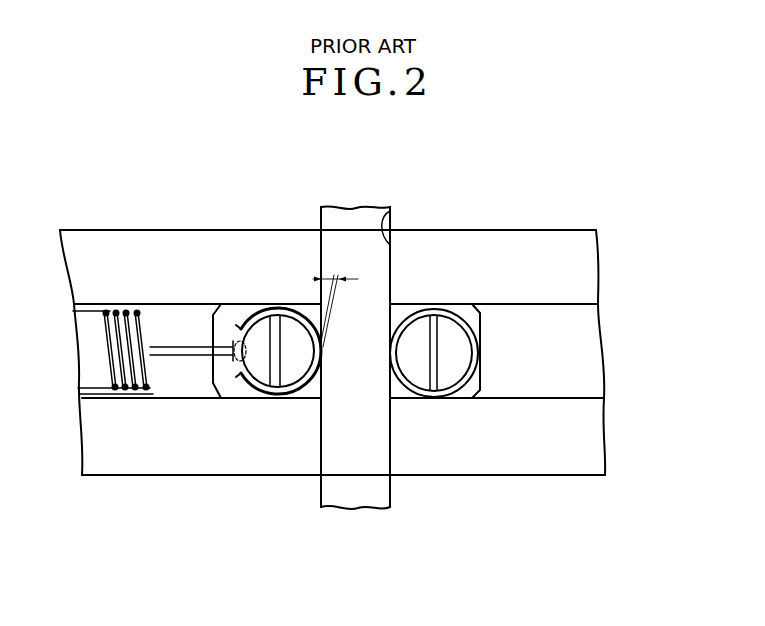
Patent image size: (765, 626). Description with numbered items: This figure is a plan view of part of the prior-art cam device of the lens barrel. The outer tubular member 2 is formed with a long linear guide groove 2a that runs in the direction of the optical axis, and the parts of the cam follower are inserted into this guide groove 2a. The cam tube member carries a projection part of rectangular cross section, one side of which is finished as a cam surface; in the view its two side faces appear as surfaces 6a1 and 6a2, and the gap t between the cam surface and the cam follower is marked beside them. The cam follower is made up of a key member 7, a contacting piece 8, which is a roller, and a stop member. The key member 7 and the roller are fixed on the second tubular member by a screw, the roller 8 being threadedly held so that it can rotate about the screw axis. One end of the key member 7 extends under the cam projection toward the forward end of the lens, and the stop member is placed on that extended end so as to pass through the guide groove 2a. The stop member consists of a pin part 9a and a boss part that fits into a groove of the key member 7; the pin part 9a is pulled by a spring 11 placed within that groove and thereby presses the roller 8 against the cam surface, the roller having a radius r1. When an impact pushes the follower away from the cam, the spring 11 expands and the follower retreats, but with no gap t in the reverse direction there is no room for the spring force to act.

The tubular member 2 is at (538, 242).
The guide groove 2a is at (590, 382).
The first side surface of strip 6a1 is at (328, 206).
The second side surface of strip 6a2 is at (387, 207).
The key member 7 is at (219, 382).
The contacting piece 8 is at (410, 318).
The pin part 9a is at (291, 310).
The spring 11 is at (108, 402).
The gap t is at (335, 302).
The roller radius r1 is at (434, 354).